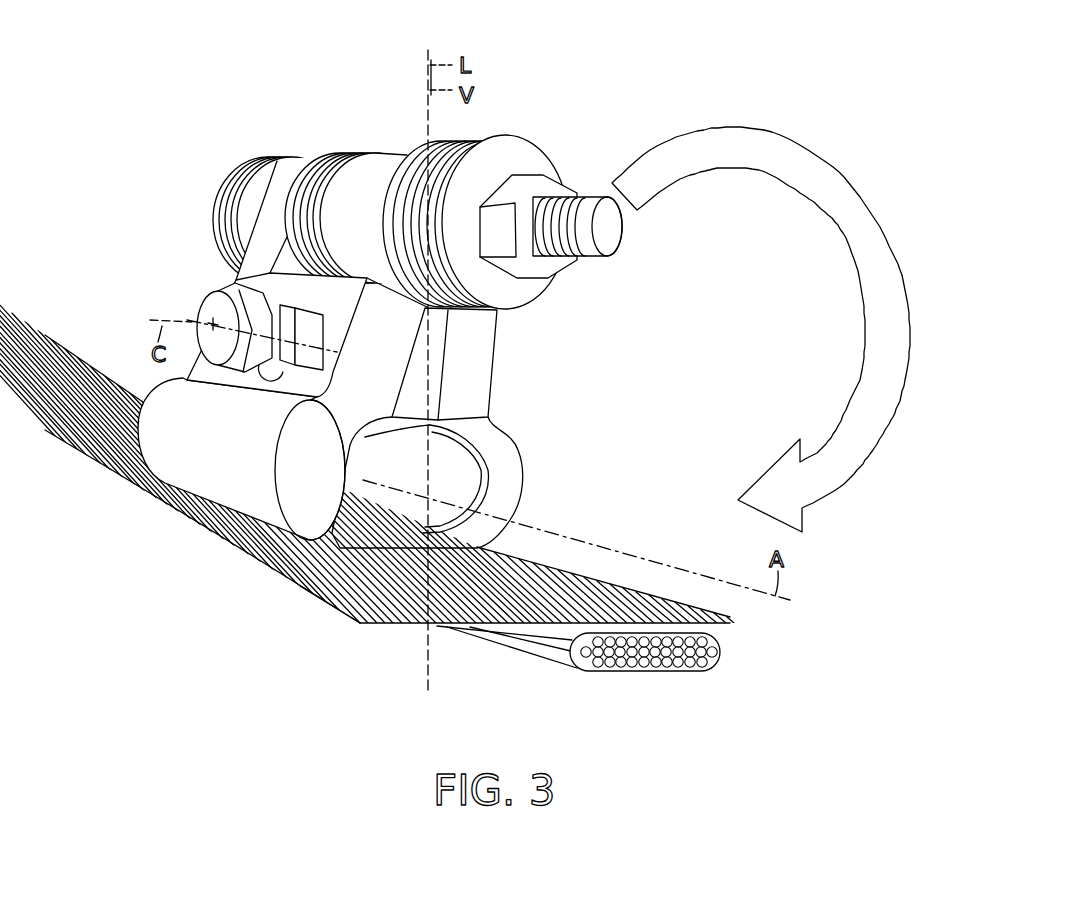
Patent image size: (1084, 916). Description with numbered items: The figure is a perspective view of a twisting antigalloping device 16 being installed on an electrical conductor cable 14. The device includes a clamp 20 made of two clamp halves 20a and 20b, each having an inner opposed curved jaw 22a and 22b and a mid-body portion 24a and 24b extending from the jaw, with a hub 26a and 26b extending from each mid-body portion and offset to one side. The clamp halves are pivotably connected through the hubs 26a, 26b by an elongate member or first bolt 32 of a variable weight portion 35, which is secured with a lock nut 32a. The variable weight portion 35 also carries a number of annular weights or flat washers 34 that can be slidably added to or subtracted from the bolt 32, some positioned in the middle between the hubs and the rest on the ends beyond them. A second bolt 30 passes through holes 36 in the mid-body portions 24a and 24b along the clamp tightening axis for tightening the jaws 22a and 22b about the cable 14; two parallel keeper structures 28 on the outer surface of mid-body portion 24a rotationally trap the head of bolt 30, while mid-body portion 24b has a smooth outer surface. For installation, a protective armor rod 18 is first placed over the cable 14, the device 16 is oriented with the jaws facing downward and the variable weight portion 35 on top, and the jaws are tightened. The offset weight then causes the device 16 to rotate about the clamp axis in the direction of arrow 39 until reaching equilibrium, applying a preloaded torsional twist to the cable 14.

The cable 14 is at (536, 652).
The antigalloping device 16 is at (64, 66).
The armor rod 18 is at (334, 608).
The clamp 20 is at (228, 471).
The clamp half 20a is at (190, 483).
The clamp half 20b is at (514, 502).
The jaw 22a is at (352, 473).
The jaw 22b is at (477, 493).
The mid-body portion 24a is at (363, 333).
The mid-body portion 24b is at (490, 379).
The hub 26a is at (285, 177).
The hub 26b is at (387, 177).
The keeper structures 28 is at (310, 340).
The second bolt 30 is at (208, 300).
The elongate member 32 is at (617, 234).
The nut 32a is at (562, 193).
The flat washers 34 is at (359, 198).
The variable weight portion 35 is at (533, 158).
The holes 36 is at (260, 378).
The arrow 39 is at (902, 362).